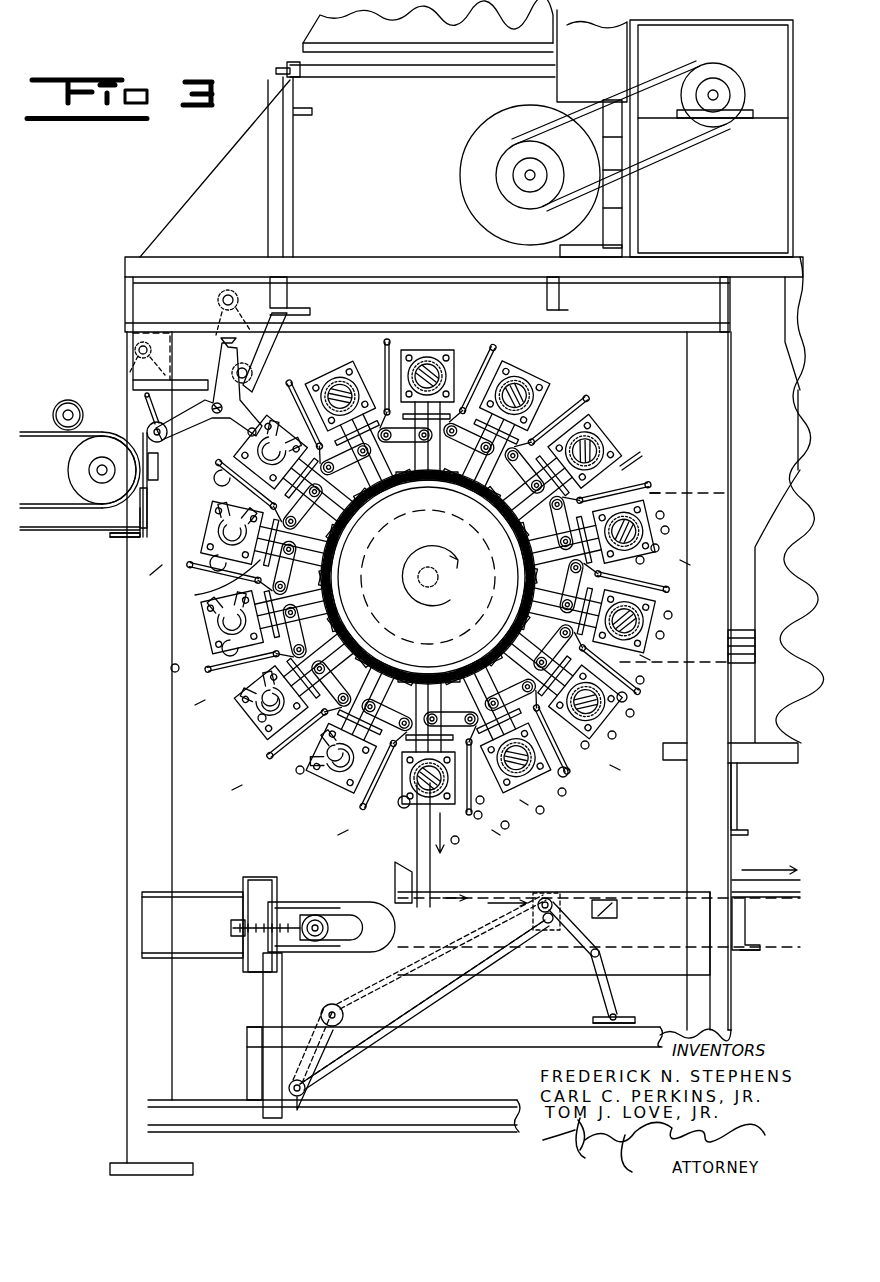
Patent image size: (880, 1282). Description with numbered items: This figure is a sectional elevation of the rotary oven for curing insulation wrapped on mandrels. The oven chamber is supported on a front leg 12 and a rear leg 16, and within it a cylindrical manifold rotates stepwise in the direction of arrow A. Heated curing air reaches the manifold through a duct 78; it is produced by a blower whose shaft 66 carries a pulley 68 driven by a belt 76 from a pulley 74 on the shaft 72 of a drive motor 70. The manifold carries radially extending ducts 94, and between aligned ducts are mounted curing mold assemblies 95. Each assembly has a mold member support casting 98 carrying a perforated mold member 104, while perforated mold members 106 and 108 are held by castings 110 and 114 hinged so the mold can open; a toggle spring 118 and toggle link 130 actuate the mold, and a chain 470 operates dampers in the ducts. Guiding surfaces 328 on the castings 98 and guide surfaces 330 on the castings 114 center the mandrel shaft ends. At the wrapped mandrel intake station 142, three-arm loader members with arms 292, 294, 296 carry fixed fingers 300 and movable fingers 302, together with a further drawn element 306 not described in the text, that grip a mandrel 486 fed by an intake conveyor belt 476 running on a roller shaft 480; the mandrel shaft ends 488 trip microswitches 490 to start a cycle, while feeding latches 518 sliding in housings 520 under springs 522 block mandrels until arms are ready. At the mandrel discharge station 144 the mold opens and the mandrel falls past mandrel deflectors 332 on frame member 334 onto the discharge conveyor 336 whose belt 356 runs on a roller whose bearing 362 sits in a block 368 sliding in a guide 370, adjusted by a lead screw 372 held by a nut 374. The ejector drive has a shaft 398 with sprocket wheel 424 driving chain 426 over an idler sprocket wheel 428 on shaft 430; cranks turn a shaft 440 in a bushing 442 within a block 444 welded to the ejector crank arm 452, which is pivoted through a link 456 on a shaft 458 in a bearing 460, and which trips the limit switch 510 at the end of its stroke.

The front leg 12 is at (127, 1017).
The rear leg 16 is at (735, 868).
The blower shaft 66 is at (725, 93).
The pulley 68 is at (738, 80).
The drive motor 70 is at (462, 170).
The motor shaft 72 is at (512, 175).
The pulley 74 is at (520, 198).
The belt 76 is at (604, 110).
The duct 78 is at (755, 493).
The radially extending duct 94 is at (438, 645).
The curing mold assembly 95 is at (362, 351).
The mold member support casting 98 is at (318, 375).
The perforated mold member 104 is at (643, 562).
The perforated mold member 106 is at (664, 515).
The perforated mold member 108 is at (660, 548).
The casting 110 is at (670, 530).
The casting 114 is at (426, 703).
The toggle spring 118 is at (680, 483).
The toggle link 130 is at (642, 453).
The wrapped mandrel intake station 142 is at (123, 372).
The mandrel discharge station 144 is at (477, 851).
The loader arm 292 is at (213, 366).
The loader arm 294 is at (248, 416).
The loader arm 296 is at (170, 440).
The fixed finger 300 is at (220, 328).
The movable finger 302 is at (282, 330).
The pin 306 is at (230, 372).
The guiding surface 328 is at (306, 609).
The guide surface 330 is at (242, 647).
The mandrel deflector 332 is at (410, 872).
The frame member 334 is at (368, 890).
The discharge conveyor 336 is at (647, 886).
The discharge conveyor belt 356 is at (755, 960).
The bearing 362 is at (310, 915).
The block 368 is at (348, 902).
The guide 370 is at (283, 882).
The lead screw 372 is at (233, 928).
The nut 374 is at (240, 945).
The shaft 398 is at (300, 1097).
The sprocket wheel 424 is at (312, 1087).
The chain 426 is at (440, 998).
The idler sprocket wheel 428 is at (345, 1012).
The shaft 430 is at (332, 1027).
The shaft 440 is at (560, 900).
The bushing 442 is at (550, 926).
The block 444 is at (547, 895).
The ejector crank arm 452 is at (475, 898).
The link 456 is at (612, 995).
The shaft 458 is at (615, 1025).
The bearing 460 is at (640, 1020).
The chain 470 is at (470, 495).
The intake conveyor belt 476 is at (56, 532).
The shaft 480 is at (96, 472).
The wrapped mandrel 486 is at (68, 400).
The mandrel shaft end 488 is at (68, 433).
The microswitch 490 is at (148, 402).
The limit switch 510 is at (619, 913).
The feeding latch 518 is at (160, 470).
The housing 520 is at (158, 495).
The spring 522 is at (140, 512).